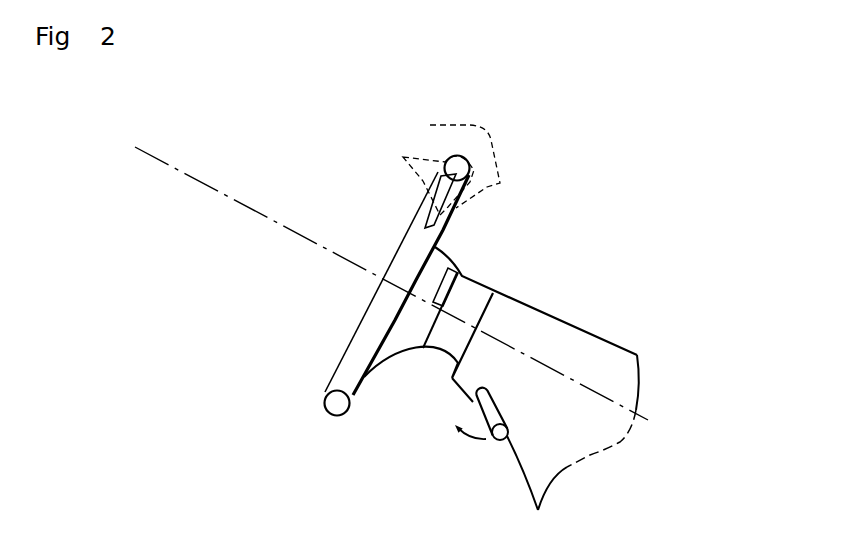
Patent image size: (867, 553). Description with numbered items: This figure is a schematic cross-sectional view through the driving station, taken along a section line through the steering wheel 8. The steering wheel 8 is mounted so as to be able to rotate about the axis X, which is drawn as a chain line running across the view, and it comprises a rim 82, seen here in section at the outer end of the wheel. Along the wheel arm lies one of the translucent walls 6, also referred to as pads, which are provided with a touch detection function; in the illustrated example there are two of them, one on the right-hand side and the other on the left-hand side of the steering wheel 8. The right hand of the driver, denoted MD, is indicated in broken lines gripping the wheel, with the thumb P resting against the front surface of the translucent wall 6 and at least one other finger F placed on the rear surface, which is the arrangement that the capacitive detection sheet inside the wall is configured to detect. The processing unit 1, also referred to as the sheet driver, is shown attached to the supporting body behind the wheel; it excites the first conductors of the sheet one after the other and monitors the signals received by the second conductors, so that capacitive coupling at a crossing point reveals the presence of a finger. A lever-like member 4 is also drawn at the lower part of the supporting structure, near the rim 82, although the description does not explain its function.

The processing unit 1 is at (462, 281).
The lever 4 is at (483, 398).
The translucent walls 6 is at (452, 224).
The steering wheel 8 is at (348, 333).
The rim 82 is at (327, 412).
The thumb P is at (420, 184).
The other finger F is at (497, 183).
The right hand of the driver MD is at (457, 133).
The axis X is at (401, 271).